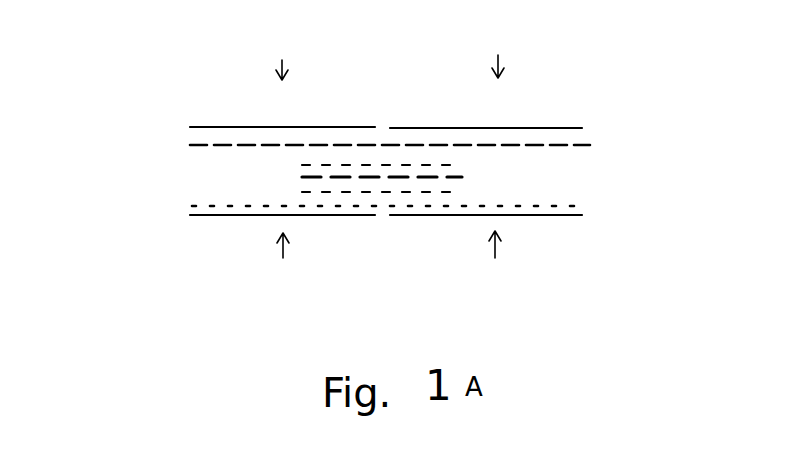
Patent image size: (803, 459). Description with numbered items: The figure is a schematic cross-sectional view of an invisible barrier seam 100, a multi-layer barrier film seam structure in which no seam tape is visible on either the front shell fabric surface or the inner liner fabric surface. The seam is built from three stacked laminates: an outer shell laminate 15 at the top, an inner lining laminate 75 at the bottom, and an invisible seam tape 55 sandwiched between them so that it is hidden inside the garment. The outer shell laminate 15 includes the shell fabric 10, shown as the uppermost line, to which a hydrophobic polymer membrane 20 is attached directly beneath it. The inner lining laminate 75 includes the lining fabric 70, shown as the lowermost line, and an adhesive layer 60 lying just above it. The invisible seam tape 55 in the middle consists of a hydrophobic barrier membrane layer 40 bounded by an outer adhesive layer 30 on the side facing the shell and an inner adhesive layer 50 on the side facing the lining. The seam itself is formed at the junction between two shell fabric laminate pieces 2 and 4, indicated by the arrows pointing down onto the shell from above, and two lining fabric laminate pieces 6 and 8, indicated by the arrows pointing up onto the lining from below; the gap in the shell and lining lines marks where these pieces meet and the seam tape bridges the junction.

The invisible barrier seam 100 is at (113, 312).
The outer shell laminate 15 is at (175, 105).
The shell fabric 10 is at (603, 129).
The hydrophobic polymer membrane 20 is at (607, 155).
The invisible seam tape 55 is at (293, 153).
The outer adhesive layer 30 is at (481, 172).
The hydrophobic barrier membrane layer 40 is at (486, 183).
The inner adhesive layer 50 is at (488, 197).
The inner lining laminate 75 is at (178, 200).
The adhesive layer 60 is at (600, 209).
The lining fabric 70 is at (598, 225).
The shell fabric laminate piece 2 is at (279, 49).
The shell fabric laminate piece 4 is at (496, 48).
The lining fabric laminate piece 6 is at (281, 265).
The lining fabric laminate piece 8 is at (494, 263).